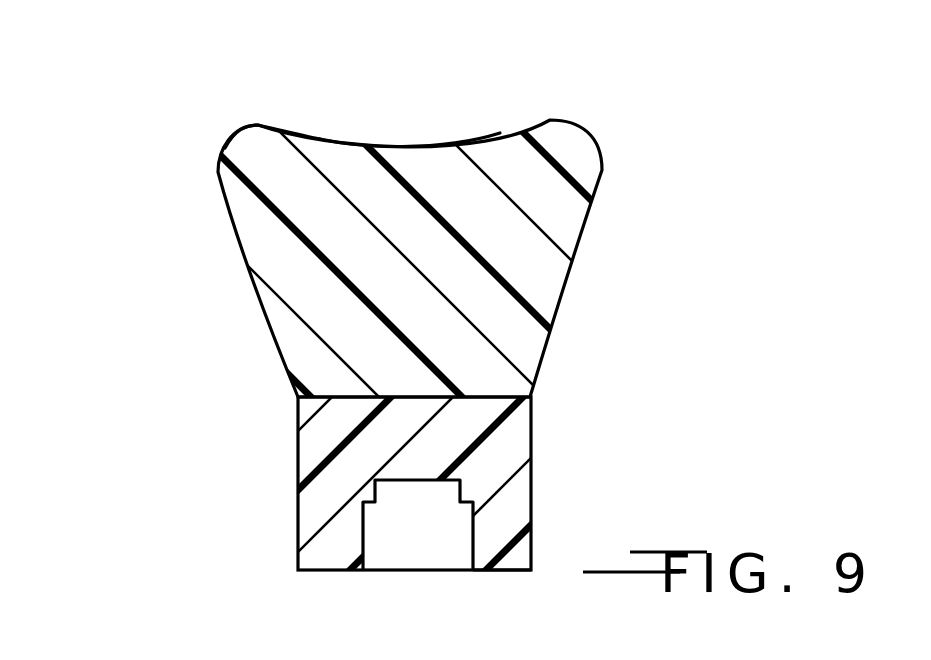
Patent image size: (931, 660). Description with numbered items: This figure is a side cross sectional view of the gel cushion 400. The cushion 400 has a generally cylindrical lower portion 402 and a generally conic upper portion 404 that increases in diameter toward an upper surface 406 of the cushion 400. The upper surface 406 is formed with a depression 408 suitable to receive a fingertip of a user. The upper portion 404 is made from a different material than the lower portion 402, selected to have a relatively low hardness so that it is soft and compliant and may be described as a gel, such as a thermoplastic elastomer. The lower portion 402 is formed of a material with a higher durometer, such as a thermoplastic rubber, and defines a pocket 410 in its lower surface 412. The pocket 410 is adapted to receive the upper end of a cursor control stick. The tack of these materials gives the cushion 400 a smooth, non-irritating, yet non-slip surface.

The cushion 400 is at (190, 203).
The lower portion 402 is at (297, 452).
The upper portion 404 is at (253, 293).
The upper surface 406 is at (258, 125).
The depression 408 is at (398, 147).
The pocket 410 is at (365, 540).
The lower surface 412 is at (498, 570).